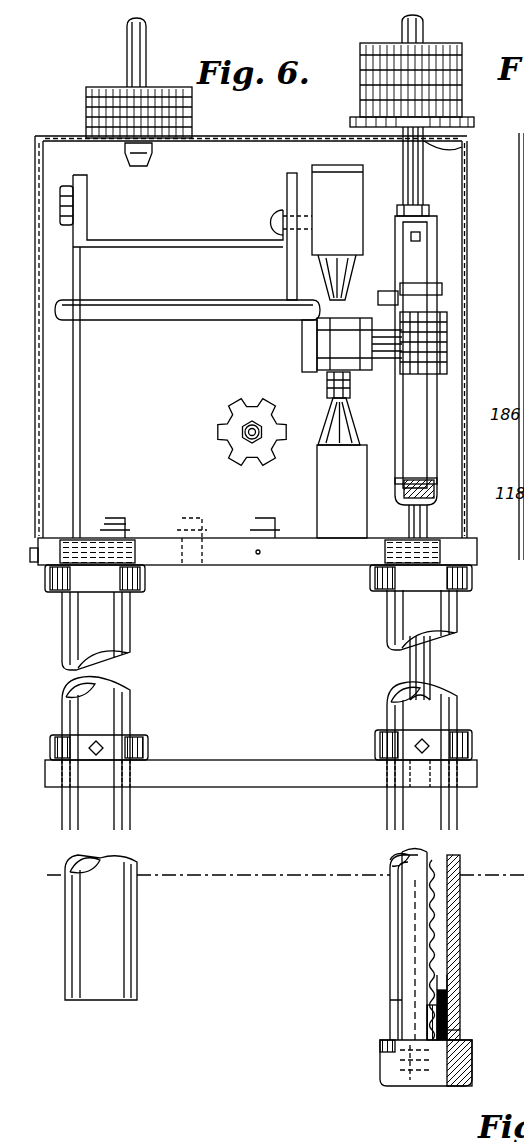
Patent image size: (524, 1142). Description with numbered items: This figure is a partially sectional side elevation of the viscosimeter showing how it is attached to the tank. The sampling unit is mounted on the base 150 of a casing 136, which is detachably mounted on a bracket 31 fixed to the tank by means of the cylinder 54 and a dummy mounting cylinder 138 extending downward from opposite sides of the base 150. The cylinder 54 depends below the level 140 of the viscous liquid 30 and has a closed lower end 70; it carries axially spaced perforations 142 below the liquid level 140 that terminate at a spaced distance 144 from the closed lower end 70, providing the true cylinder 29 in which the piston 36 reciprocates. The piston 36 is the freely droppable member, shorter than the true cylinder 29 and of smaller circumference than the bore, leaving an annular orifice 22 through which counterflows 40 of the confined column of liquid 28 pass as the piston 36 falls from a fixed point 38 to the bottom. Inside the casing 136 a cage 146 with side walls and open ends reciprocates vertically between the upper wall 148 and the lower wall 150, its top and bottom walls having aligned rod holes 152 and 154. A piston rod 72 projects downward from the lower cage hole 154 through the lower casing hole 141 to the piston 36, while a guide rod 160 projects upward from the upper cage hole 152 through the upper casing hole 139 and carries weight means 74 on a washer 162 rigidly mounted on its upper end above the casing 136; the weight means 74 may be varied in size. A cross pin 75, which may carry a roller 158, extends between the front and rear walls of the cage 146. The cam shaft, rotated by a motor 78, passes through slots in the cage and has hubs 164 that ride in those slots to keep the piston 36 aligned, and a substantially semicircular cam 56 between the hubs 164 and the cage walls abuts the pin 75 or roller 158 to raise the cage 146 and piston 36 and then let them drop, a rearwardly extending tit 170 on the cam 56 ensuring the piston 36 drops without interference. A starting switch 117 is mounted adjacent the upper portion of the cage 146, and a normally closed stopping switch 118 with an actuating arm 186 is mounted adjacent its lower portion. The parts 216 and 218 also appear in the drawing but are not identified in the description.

The weight means 74 is at (463, 100).
The washer 162 is at (474, 122).
The upper wall of casing 148 is at (287, 130).
The upper casing hole 139 is at (463, 148).
The guide rod 160 is at (418, 158).
The upper rod hole 152 is at (421, 207).
The tit 170 is at (420, 236).
The cam 56 is at (415, 262).
The casing 136 is at (467, 270).
The roller 158 is at (422, 289).
The starting switch 117 is at (346, 208).
The cross pin 75 is at (383, 298).
The cage 146 is at (190, 239).
The motor 216 is at (302, 357).
The hubs 164 is at (427, 373).
The coupling 218 is at (334, 396).
The actuating arm 186 is at (346, 400).
The motor 78 is at (86, 413).
The lower rod hole 154 is at (440, 484).
The stopping switch 118 is at (330, 486).
The base of casing 150 is at (319, 553).
The lower casing hole 141 is at (376, 587).
The piston rod 72 is at (435, 660).
The bracket 31 is at (280, 763).
The dummy mounting cylinder 138 is at (129, 903).
The liquid level 140 is at (330, 873).
The viscous liquid 30 is at (232, 1020).
The cylinder 54 is at (410, 941).
The perforations 142 is at (460, 883).
The spaced distance 144 is at (393, 997).
The fixed point 38 is at (395, 1000).
The counterflows 40 is at (395, 1021).
The column of liquid 28 is at (449, 1005).
The annular orifice 22 is at (446, 1013).
The piston 36 is at (445, 1025).
The true cylinder 29 is at (449, 1038).
The closed lower end 70 is at (397, 1086).